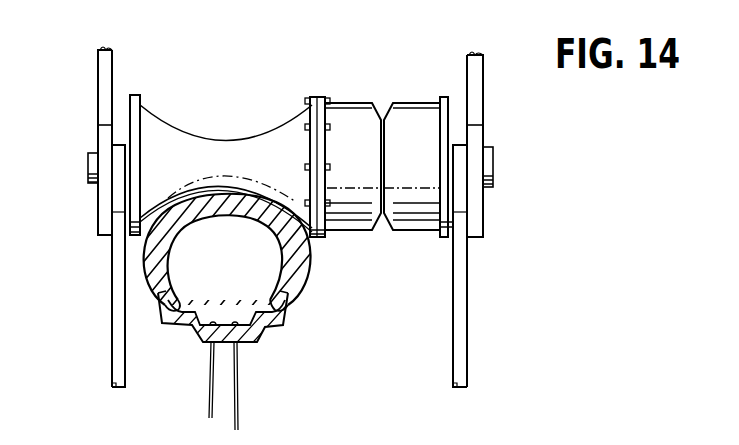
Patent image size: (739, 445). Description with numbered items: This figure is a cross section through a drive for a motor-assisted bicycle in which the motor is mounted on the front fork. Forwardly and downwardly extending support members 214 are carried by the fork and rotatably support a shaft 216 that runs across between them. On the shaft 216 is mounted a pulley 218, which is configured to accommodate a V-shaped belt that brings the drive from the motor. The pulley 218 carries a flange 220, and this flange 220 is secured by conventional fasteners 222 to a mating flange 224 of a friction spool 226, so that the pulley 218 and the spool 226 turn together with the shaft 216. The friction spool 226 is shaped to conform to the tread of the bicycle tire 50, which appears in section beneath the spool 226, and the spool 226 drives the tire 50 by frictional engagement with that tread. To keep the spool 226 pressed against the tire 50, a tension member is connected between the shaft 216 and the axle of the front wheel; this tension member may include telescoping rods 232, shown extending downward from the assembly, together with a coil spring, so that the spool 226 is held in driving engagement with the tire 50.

The bicycle tire 50 is at (296, 265).
The support members 214 is at (98, 66).
The shaft 216 is at (90, 165).
The pulley 218 is at (418, 110).
The flange 220 is at (322, 102).
The fasteners 222 is at (306, 166).
The flange 224 is at (316, 96).
The friction spool 226 is at (178, 147).
The telescoping rods 232 is at (112, 283).